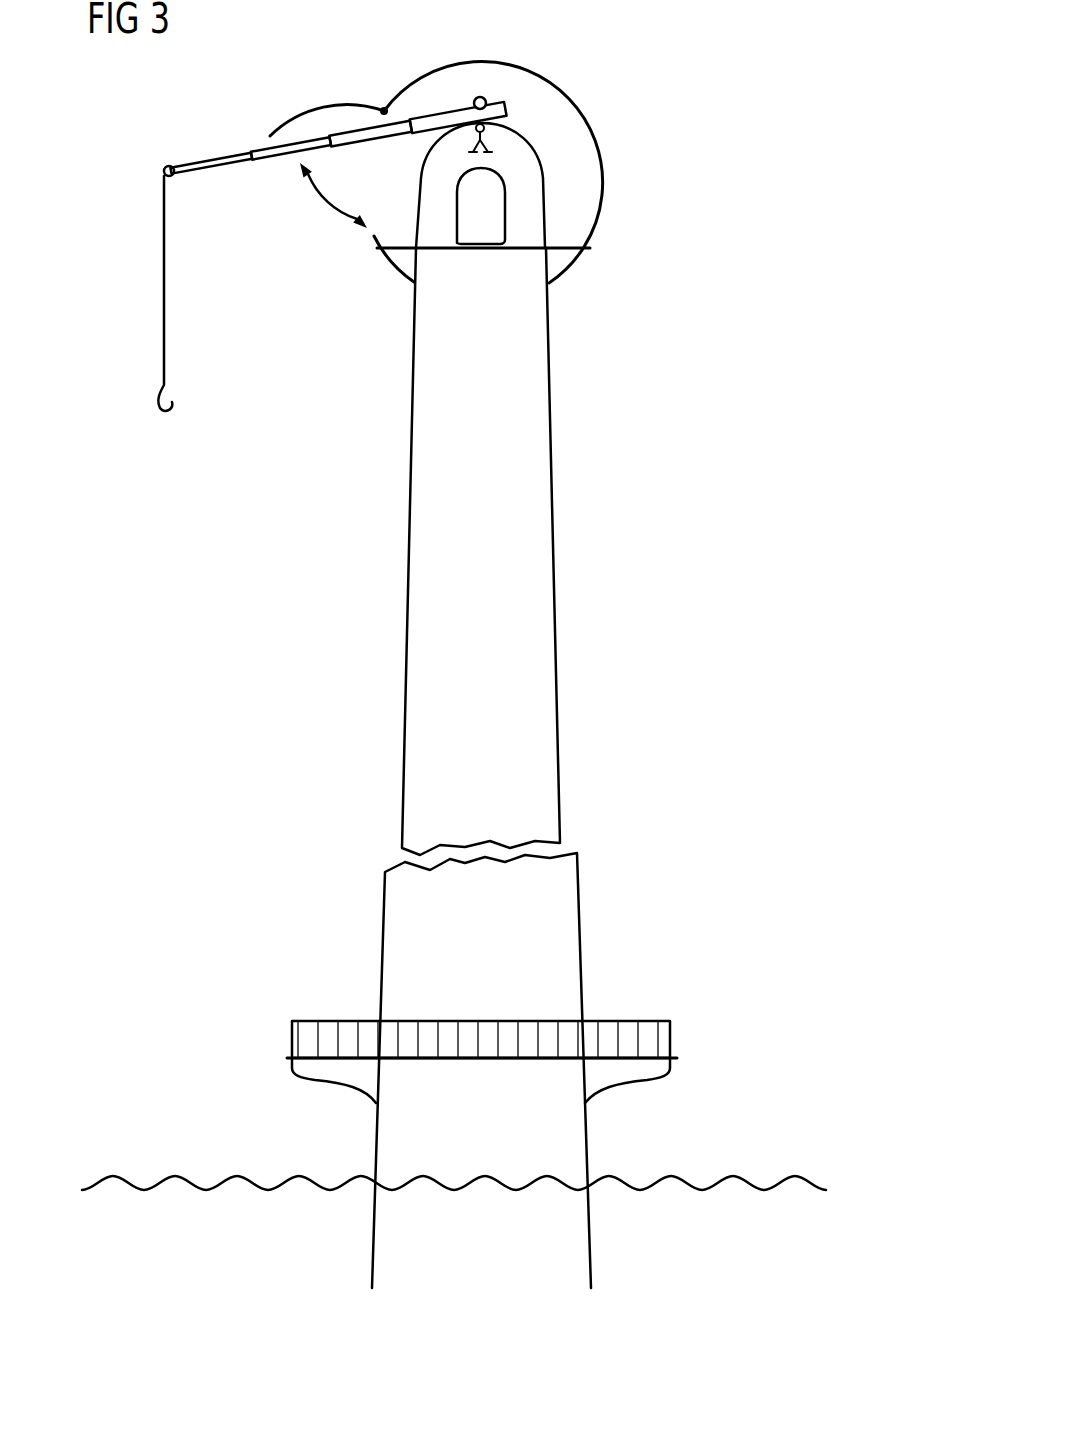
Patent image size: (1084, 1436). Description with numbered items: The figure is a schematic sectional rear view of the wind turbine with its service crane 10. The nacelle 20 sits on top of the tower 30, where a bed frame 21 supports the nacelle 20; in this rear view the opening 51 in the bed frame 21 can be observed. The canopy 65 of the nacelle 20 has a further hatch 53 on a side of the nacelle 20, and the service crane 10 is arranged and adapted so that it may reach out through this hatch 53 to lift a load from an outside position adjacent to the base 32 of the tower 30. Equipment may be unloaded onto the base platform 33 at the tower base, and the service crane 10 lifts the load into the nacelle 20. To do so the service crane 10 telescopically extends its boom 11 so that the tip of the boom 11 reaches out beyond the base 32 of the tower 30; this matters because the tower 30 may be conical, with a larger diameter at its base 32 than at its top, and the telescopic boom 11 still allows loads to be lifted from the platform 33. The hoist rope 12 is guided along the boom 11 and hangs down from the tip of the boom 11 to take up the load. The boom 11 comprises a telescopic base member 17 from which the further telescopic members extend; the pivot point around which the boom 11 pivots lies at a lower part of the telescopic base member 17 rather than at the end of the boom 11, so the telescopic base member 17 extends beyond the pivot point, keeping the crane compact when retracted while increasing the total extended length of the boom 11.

The service crane 10 is at (157, 158).
The boom 11 is at (207, 162).
The hoist rope 12 is at (163, 252).
The telescopic base member 17 is at (445, 122).
The nacelle 20 is at (645, 65).
The bed frame 21 is at (541, 178).
The tower 30 is at (537, 517).
The base 32 is at (388, 976).
The base platform 33 is at (672, 1042).
The opening 51 is at (493, 220).
The hatch 53 is at (328, 103).
The canopy 65 is at (563, 92).